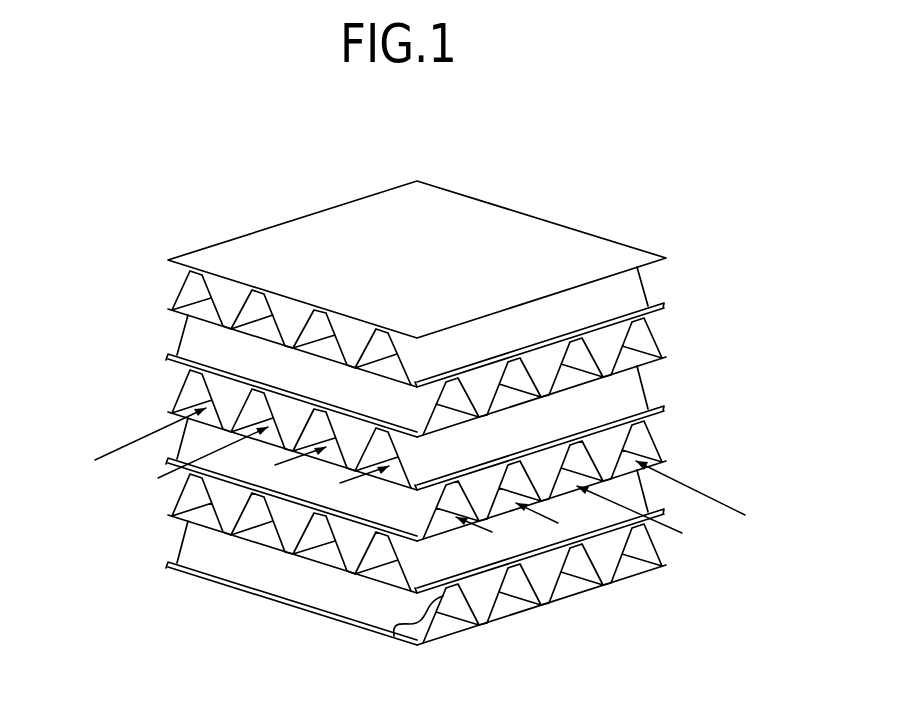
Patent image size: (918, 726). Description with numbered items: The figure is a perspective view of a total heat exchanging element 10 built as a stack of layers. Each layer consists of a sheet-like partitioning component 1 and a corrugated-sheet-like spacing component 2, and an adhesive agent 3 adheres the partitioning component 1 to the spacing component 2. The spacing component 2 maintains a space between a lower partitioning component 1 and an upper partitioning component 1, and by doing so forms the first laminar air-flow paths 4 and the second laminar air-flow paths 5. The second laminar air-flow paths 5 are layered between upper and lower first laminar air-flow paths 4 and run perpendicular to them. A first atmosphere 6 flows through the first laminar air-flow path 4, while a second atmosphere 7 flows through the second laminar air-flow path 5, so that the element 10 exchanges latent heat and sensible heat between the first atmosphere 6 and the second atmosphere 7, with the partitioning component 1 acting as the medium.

The total heat exchanging element 10 is at (529, 190).
The sheet-like partitioning component 1 is at (597, 248).
The corrugated-sheet-like spacing component 2 is at (654, 350).
The adhesive agent 3 is at (197, 269).
The first laminar air-flow path 4 is at (250, 313).
The second laminar air-flow path 5 is at (638, 440).
The first atmosphere 6 is at (122, 448).
The second atmosphere 7 is at (684, 484).